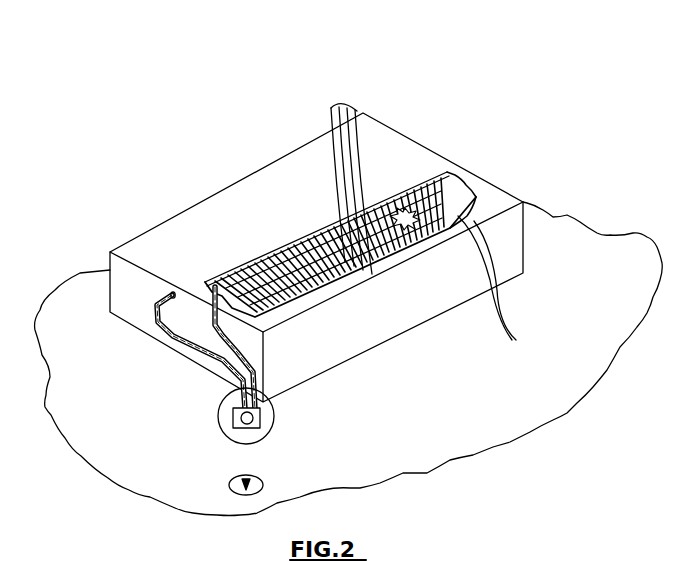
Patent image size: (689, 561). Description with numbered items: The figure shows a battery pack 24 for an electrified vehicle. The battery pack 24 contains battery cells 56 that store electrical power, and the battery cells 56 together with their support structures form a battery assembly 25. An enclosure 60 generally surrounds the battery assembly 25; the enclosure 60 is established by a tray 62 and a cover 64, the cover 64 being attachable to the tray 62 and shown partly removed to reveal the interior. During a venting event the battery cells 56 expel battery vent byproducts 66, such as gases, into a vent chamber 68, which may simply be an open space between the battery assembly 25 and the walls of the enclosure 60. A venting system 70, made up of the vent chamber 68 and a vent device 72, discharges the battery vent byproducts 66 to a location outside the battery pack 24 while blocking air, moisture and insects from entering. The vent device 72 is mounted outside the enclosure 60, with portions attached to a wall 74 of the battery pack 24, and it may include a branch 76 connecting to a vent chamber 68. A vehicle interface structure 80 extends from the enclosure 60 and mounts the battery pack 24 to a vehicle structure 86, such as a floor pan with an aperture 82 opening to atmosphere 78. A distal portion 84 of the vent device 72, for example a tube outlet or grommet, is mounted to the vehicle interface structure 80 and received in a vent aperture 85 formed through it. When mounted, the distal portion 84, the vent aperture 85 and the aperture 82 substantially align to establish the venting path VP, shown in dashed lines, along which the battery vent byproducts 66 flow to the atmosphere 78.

The battery pack 24 is at (359, 64).
The battery assembly 25 is at (417, 170).
The battery cells 56 is at (512, 340).
The enclosure 60 is at (292, 254).
The tray 62 is at (116, 322).
The cover 64 is at (160, 247).
The battery vent byproducts 66 is at (241, 282).
The vent chamber 68 is at (443, 231).
The venting system 70 is at (139, 301).
The vent device 72 is at (262, 392).
The wall 74 is at (157, 328).
The branch 76 is at (207, 328).
The atmosphere 78 is at (184, 550).
The vehicle interface structure 80 is at (270, 436).
The aperture 82 is at (245, 497).
The distal portion 84 is at (262, 413).
The vent aperture 85 is at (258, 421).
The vehicle structure 86 is at (476, 435).
The venting path VP is at (210, 328).